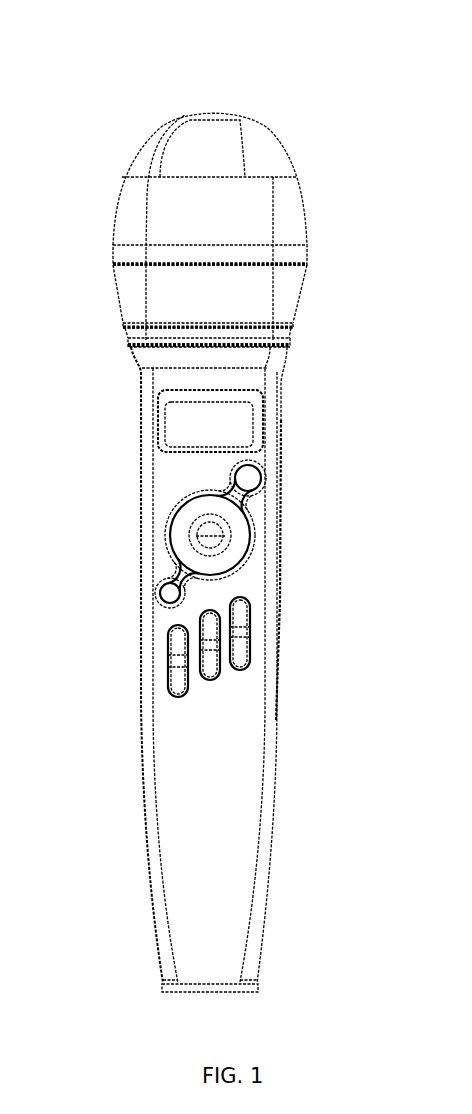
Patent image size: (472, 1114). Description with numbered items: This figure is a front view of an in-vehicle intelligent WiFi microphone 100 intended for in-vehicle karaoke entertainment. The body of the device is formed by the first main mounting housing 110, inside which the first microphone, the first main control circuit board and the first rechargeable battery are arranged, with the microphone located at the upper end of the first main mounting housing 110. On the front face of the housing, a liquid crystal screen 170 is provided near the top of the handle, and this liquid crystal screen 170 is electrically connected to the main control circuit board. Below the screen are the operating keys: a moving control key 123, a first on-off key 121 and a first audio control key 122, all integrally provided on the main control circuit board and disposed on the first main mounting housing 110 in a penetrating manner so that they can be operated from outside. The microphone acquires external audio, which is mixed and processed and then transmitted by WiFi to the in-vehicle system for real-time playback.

The in-vehicle intelligent WiFi microphone 100 is at (305, 136).
The first main mounting housing 110 is at (235, 767).
The first on-off key 121 is at (282, 443).
The first audio control key 122 is at (243, 607).
The moving control key 123 is at (185, 537).
The liquid crystal screen 170 is at (198, 428).